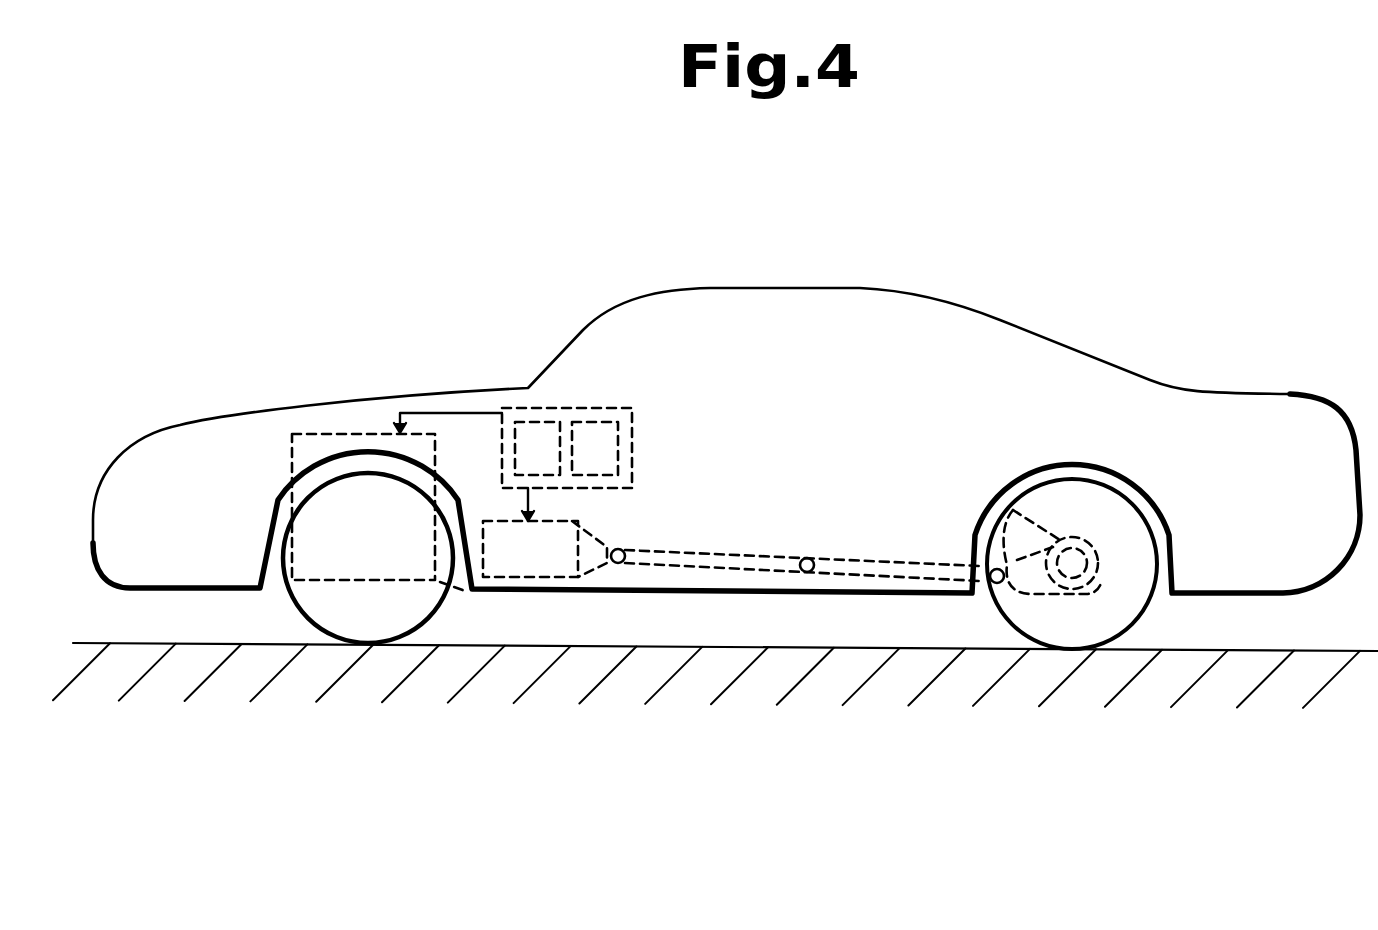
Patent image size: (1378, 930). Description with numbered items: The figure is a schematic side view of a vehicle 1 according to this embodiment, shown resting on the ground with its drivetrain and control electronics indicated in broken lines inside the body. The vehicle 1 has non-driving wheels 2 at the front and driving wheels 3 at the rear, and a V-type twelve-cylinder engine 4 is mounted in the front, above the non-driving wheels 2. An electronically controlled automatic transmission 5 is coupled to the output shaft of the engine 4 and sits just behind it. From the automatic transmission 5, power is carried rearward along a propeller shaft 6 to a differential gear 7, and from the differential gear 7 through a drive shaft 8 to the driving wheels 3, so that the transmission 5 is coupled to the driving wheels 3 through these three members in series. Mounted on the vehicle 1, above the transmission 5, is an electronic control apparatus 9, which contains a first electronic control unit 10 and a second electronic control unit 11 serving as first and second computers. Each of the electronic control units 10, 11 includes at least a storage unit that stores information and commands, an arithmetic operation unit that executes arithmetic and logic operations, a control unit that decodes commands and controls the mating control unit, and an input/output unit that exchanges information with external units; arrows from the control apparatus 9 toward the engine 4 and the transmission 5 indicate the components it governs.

The vehicle 1 is at (1047, 335).
The non-driving wheels 2 is at (312, 603).
The driving wheels 3 is at (1137, 608).
The engine 4 is at (295, 436).
The electronically controlled automatic transmission 5 is at (580, 523).
The propeller shaft 6 is at (837, 557).
The differential gear 7 is at (1003, 545).
The drive shaft 8 is at (1013, 510).
The electronic control apparatus 9 is at (577, 408).
The first electronic control unit 10 is at (482, 521).
The second electronic control unit 11 is at (635, 433).